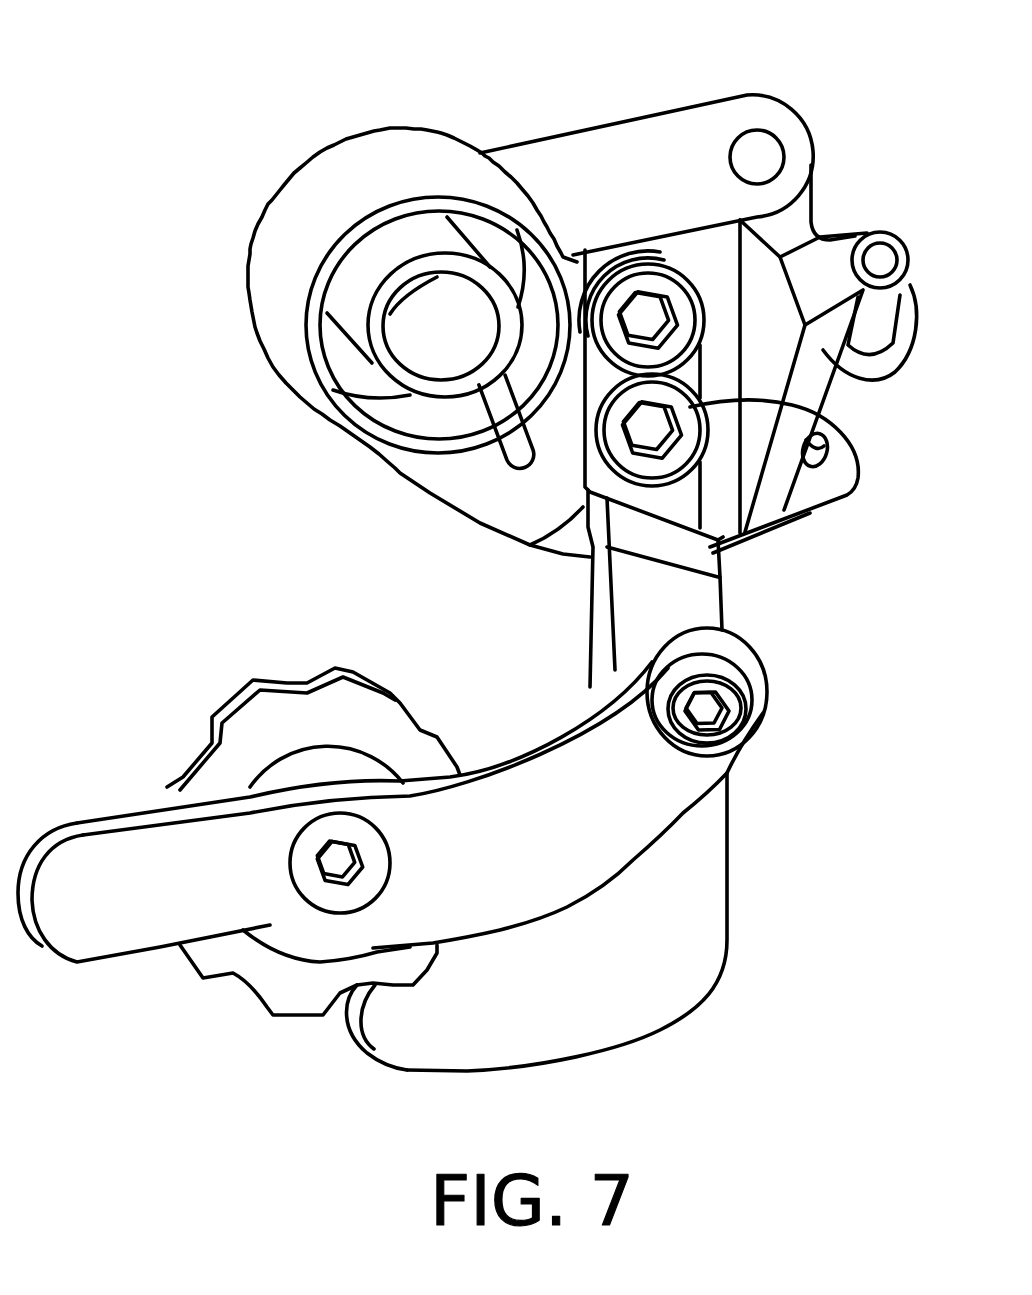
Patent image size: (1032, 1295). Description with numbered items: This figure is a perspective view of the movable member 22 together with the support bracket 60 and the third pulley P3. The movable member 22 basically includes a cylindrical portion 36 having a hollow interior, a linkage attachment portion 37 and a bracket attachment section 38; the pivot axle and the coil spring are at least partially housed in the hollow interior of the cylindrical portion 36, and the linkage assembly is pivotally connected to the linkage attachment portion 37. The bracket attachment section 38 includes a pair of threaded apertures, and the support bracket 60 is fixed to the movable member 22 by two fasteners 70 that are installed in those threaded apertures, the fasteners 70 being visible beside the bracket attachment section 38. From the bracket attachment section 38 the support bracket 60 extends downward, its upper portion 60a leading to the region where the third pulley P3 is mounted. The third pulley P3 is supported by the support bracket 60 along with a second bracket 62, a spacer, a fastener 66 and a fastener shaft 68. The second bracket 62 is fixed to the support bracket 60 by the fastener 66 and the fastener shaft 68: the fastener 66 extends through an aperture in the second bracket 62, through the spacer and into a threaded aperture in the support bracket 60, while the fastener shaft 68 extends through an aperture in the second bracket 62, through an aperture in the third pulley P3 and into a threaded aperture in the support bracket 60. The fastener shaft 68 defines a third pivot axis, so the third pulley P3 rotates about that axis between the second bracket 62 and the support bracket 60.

The movable member 22 is at (558, 123).
The cylindrical portion 36 is at (307, 218).
The linkage attachment portion 37 is at (777, 117).
The bracket attachment section 38 is at (703, 260).
The fasteners 70 is at (693, 320).
The upper portion of arm 60a is at (673, 492).
The fastener 66 is at (730, 705).
The second bracket 62 is at (87, 917).
The fastener shaft 68 is at (358, 878).
The third pulley P3 is at (360, 710).
The support bracket 60 is at (670, 950).